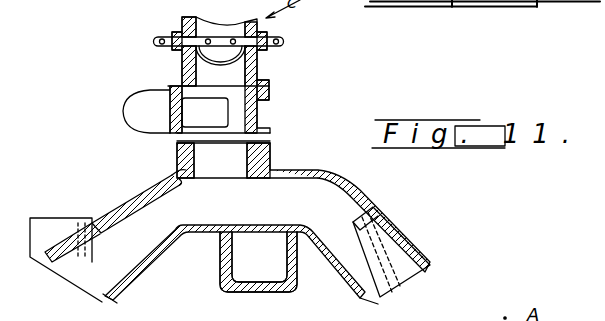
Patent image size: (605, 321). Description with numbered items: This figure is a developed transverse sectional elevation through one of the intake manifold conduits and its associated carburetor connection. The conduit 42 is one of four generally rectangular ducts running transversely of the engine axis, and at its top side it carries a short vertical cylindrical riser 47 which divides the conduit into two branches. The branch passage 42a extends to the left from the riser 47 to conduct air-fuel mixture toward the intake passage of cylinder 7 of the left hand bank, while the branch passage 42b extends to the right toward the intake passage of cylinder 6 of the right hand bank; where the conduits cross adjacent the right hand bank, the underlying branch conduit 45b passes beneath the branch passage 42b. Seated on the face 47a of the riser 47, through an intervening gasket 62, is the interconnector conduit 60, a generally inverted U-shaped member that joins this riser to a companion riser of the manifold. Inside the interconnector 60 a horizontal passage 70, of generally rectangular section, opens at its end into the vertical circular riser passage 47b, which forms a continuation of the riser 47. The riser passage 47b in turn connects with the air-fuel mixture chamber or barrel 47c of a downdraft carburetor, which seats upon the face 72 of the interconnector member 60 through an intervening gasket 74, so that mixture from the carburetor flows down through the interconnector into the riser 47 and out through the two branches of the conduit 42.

The face 72 is at (193, 72).
The gasket 74 is at (217, 84).
The air-fuel mixture chamber or barrel 47c is at (265, 68).
The vertical circular riser passage 47b is at (262, 82).
The interconnector conduit or pipe 60 is at (289, 95).
The gasket 62 is at (250, 125).
The horizontal passage 70 is at (214, 118).
The riser 47 is at (230, 172).
The face 47a is at (260, 145).
The branch passage 42a is at (138, 251).
The conduit 42 is at (228, 218).
The branch passage 42b is at (340, 227).
The underlying branch conduit 45b is at (270, 264).
The cylinder 7 is at (66, 260).
The cylinder 6 is at (391, 256).